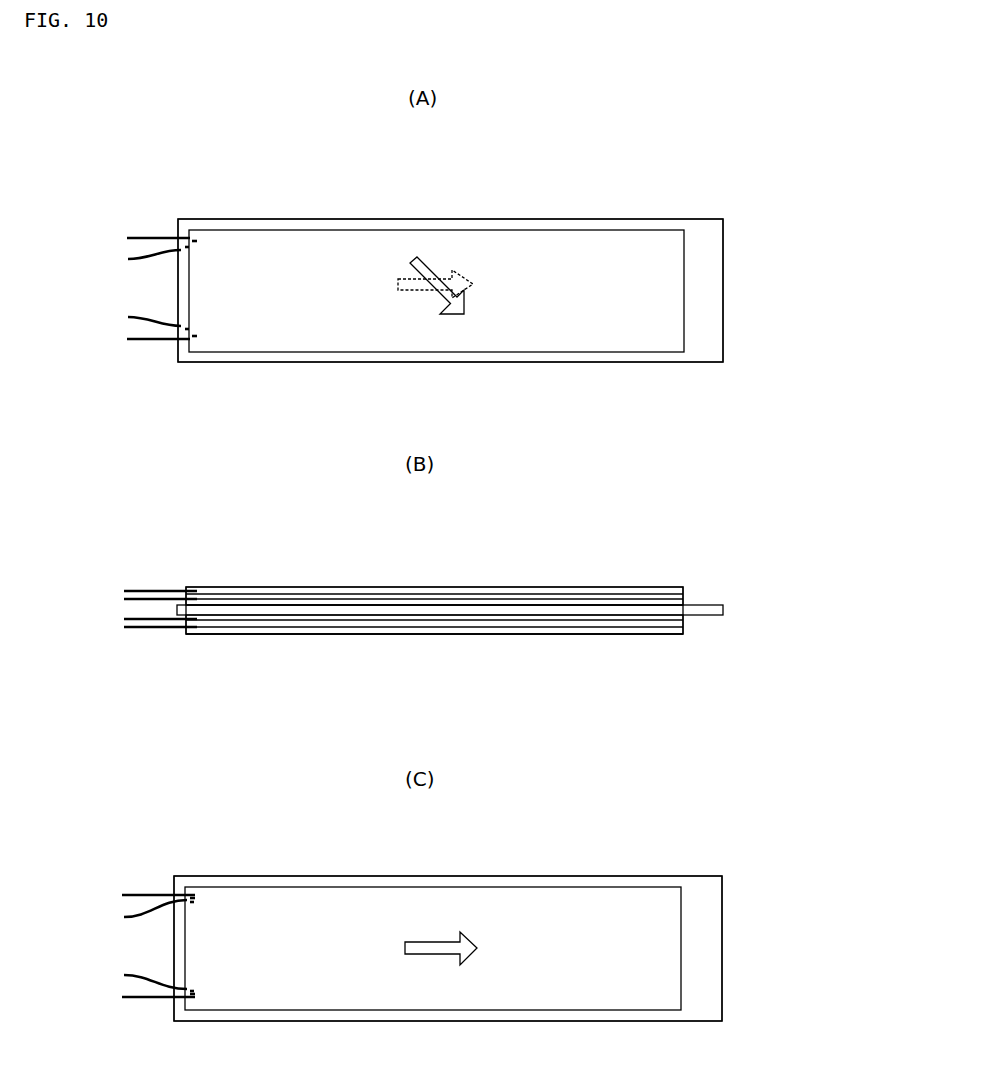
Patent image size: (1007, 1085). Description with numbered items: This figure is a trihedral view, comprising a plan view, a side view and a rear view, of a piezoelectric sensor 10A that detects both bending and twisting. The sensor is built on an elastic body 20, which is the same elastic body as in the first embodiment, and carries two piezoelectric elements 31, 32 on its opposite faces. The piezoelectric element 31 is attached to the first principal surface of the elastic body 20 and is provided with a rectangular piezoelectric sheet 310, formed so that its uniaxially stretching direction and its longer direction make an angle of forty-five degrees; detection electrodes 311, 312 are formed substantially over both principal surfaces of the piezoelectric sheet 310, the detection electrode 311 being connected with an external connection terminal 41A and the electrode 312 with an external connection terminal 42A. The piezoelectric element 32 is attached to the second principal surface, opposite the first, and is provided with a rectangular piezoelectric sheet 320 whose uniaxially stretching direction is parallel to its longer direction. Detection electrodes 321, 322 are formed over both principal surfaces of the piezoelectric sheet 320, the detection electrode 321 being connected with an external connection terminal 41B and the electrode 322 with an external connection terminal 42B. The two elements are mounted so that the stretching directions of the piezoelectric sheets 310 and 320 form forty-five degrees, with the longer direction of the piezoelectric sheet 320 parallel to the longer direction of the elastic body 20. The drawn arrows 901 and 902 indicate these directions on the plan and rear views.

The piezoelectric sensor 10A is at (678, 133).
The elastic body 20 is at (695, 353).
The piezoelectric element 31 is at (568, 224).
The piezoelectric element 32 is at (602, 666).
The piezoelectric sheet 310 is at (407, 597).
The detection electrode 311 is at (455, 592).
The detection electrode 312 is at (490, 597).
The piezoelectric sheet 320 is at (405, 622).
The detection electrode 321 is at (452, 628).
The detection electrode 322 is at (500, 625).
The external connection terminal 41A is at (152, 235).
The external connection terminal 41B is at (156, 311).
The external connection terminal 42A is at (138, 347).
The external connection terminal 42B is at (153, 258).
The arrow indicating stretching direction 901 is at (436, 297).
The arrow indicating detection direction 902 is at (448, 268).